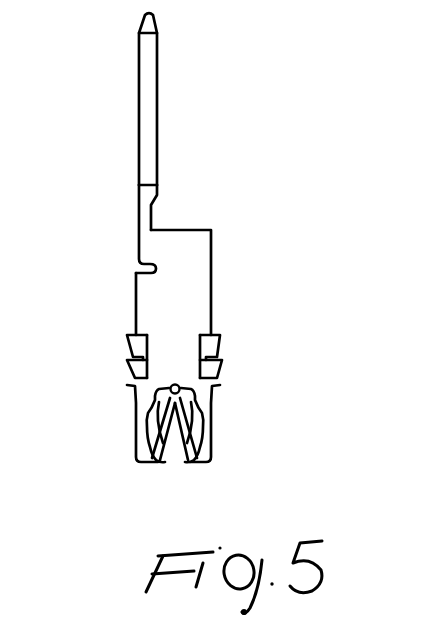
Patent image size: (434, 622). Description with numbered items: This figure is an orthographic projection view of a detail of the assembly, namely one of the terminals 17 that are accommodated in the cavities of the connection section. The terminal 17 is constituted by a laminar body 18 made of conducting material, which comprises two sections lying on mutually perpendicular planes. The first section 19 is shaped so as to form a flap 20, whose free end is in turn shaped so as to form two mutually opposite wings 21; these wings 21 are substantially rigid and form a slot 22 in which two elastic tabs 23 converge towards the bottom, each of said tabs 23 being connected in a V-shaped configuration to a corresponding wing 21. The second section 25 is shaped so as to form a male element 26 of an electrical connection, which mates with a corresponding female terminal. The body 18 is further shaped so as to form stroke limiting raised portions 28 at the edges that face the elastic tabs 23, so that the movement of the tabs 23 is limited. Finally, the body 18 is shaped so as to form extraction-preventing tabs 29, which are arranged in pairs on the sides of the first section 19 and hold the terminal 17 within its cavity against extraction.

The terminal 17 is at (232, 247).
The laminar body 18 is at (124, 226).
The first section 19 is at (114, 378).
The flap 20 is at (183, 363).
The wings 21 is at (135, 423).
The slot 22 is at (182, 457).
The elastic tabs 23 is at (148, 458).
The second section 25 is at (134, 73).
The male element 26 is at (160, 77).
The stroke limiting raised portions 28 is at (193, 401).
The extraction-preventing tabs 29 is at (132, 368).